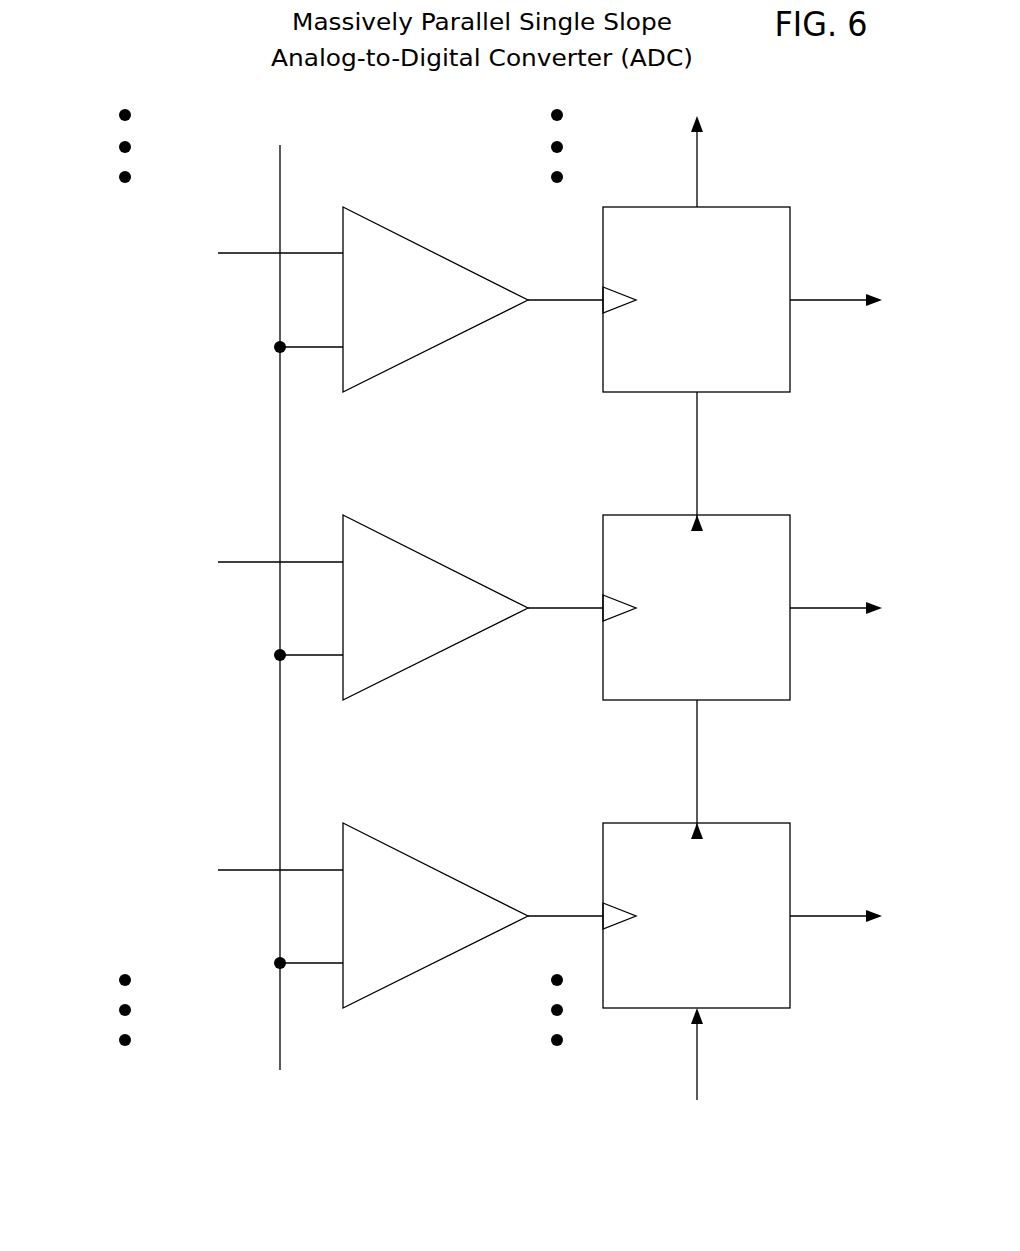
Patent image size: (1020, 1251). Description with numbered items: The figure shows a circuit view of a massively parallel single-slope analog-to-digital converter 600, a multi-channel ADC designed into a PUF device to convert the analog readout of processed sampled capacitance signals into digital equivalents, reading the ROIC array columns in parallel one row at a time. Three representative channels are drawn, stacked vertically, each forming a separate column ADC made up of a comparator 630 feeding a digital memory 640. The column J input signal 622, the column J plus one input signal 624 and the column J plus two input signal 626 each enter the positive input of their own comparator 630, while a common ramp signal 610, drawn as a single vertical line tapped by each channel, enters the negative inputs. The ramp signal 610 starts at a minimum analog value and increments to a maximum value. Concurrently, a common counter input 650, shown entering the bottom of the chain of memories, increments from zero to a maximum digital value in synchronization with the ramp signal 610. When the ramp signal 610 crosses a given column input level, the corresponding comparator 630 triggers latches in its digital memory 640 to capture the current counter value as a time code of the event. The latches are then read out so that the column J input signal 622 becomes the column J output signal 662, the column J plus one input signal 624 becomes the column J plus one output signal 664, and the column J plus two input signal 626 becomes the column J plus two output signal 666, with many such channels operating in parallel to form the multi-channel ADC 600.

The parallel analog-to-digital converter 600 is at (214, 106).
The common ramp signal 610 is at (280, 657).
The column J input signal 622 is at (192, 255).
The column J+1 input signal 624 is at (202, 564).
The column J+2 input signal 626 is at (202, 872).
The comparator 630 is at (384, 345).
The digital memory 640 is at (678, 346).
The common counter input 650 is at (697, 1089).
The column J output signal 662 is at (851, 298).
The column J+1 output signal 664 is at (851, 606).
The column J+2 output signal 666 is at (851, 914).